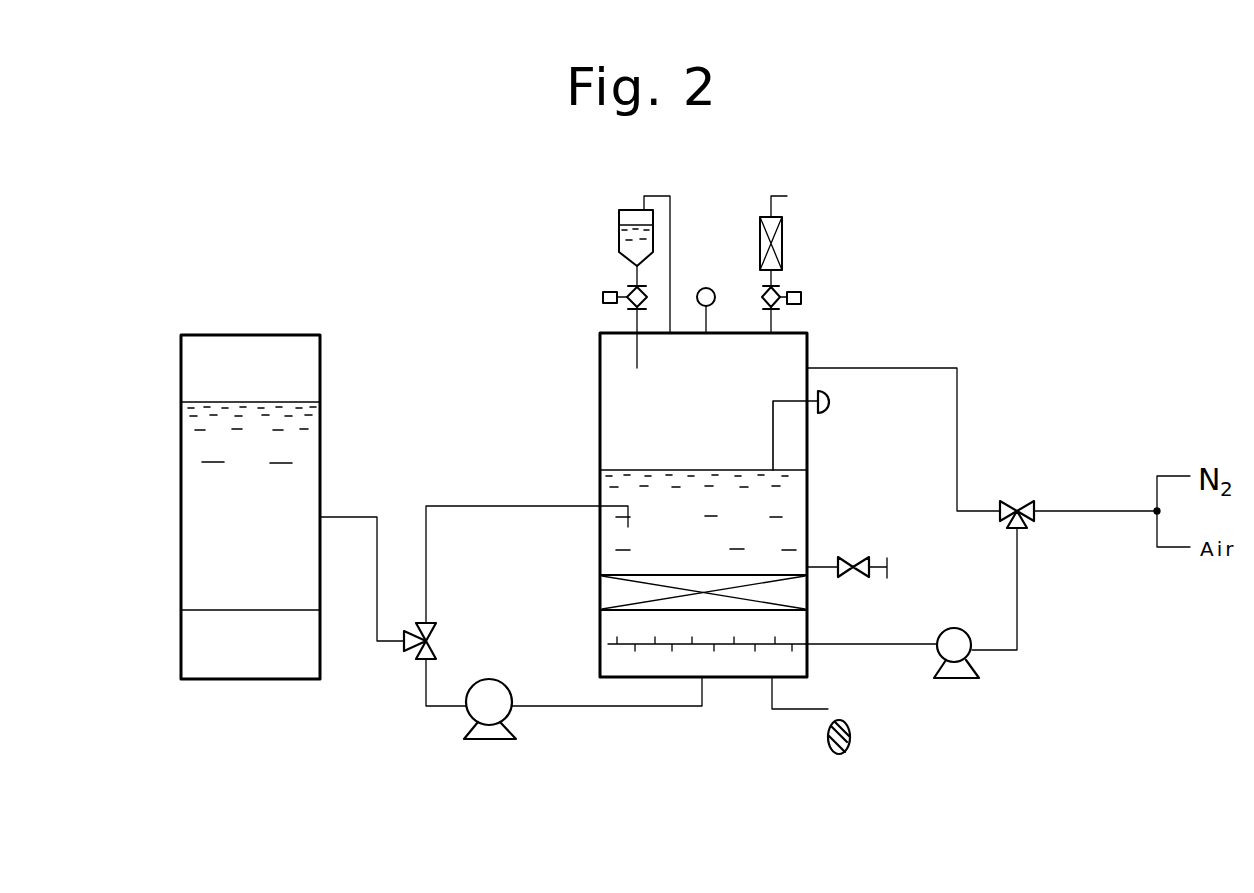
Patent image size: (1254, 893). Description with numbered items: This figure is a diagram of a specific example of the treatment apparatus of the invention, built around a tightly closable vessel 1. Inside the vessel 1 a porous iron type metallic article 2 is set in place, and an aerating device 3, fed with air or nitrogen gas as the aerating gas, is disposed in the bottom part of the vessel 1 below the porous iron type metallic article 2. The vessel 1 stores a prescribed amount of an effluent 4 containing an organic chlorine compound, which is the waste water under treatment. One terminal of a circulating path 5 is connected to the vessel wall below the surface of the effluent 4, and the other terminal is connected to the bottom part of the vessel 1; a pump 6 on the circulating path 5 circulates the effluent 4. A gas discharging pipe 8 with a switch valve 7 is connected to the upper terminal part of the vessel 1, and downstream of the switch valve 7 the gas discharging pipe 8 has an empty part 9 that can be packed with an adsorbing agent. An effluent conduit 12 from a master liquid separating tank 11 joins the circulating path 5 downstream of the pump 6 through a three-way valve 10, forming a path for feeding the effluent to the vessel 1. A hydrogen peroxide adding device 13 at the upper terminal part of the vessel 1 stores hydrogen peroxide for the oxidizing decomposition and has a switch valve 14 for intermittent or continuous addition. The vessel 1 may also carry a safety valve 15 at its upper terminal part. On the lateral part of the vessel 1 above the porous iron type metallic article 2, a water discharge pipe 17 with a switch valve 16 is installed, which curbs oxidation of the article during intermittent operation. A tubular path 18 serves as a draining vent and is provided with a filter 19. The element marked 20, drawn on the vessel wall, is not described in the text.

The tightly closable vessel 1 is at (597, 401).
The porous iron type metallic article 2 is at (805, 594).
The aerating device 3 is at (797, 646).
The effluent 4 is at (802, 497).
The circulating path 5 is at (573, 708).
The pump 6 is at (505, 686).
The switch valve 7 is at (790, 291).
The gas discharging pipe 8 is at (773, 322).
The empty part 9 is at (784, 228).
The three-way valve 10 is at (429, 633).
The master liquid separating tank 11 is at (181, 458).
The effluent conduit 12 is at (352, 516).
The hydrogen peroxide adding device 13 is at (618, 227).
The switch valve 14 is at (603, 297).
The safety valve 15 is at (706, 290).
The switch valve 16 is at (851, 560).
The water discharge pipe 17 is at (889, 565).
The tubular path 18 is at (789, 710).
The filter 19 is at (851, 734).
The level sensor 20 is at (834, 400).